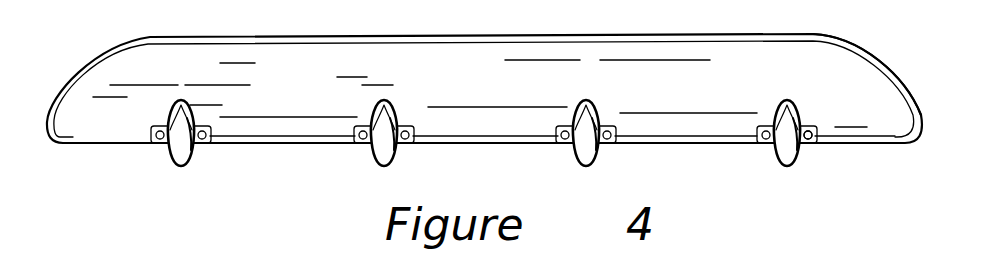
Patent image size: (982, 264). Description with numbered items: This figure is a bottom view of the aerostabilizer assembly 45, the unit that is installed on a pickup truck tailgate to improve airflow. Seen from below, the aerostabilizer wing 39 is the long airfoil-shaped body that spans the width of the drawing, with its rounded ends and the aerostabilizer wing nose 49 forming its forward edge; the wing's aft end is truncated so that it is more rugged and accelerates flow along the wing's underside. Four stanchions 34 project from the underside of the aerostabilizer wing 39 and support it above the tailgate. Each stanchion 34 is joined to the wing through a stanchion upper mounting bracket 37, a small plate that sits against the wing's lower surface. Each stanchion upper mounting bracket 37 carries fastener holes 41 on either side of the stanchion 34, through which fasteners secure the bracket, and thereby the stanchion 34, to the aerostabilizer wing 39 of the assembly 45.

The aerostabilizer wing 39 is at (477, 87).
The aerostabilizer assembly 45 is at (812, 87).
The stanchion 34 is at (594, 104).
The fastener hole 41 is at (160, 143).
The stanchion upper mounting bracket 37 is at (767, 142).
The aerostabilizer wing nose 49 is at (820, 145).